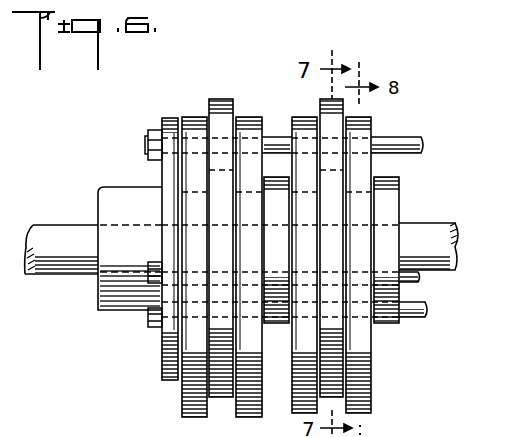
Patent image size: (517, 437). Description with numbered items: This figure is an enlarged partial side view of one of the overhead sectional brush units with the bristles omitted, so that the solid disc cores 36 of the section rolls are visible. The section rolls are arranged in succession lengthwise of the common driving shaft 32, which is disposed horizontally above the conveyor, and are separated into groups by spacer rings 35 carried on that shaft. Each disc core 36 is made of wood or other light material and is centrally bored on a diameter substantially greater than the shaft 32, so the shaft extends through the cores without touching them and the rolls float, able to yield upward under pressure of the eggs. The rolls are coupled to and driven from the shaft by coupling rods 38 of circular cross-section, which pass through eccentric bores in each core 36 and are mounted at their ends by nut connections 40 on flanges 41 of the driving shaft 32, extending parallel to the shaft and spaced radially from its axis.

The driving shaft 32 is at (456, 236).
The spacer rings 35 is at (273, 173).
The disc core 36 is at (362, 169).
The coupling rods 38 is at (400, 137).
The nut connections 40 is at (147, 132).
The flanges 41 is at (115, 197).